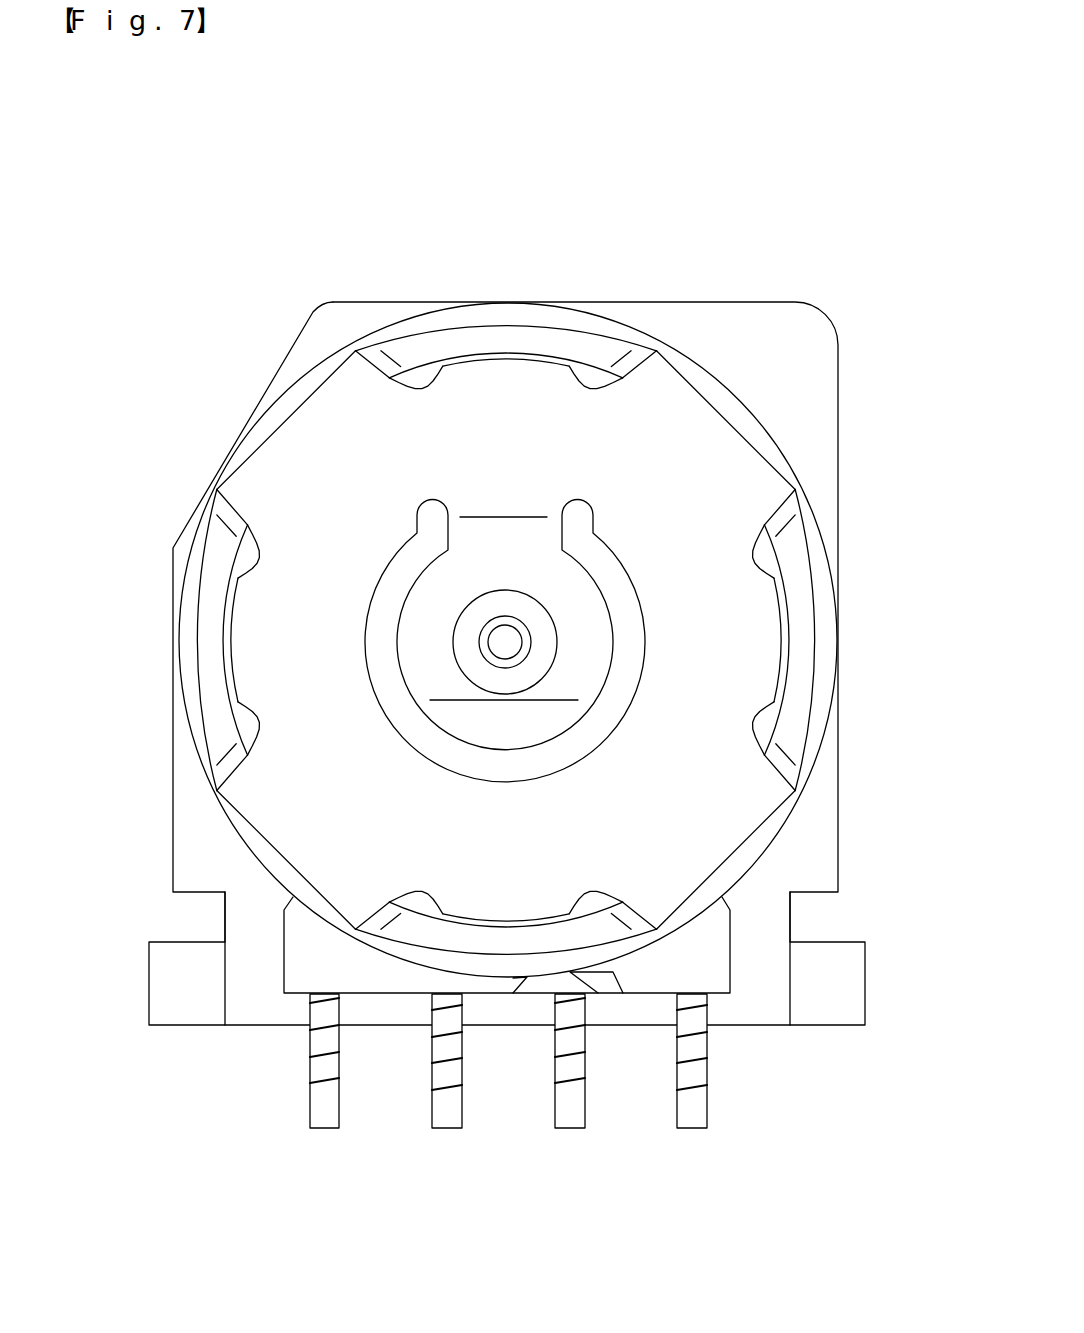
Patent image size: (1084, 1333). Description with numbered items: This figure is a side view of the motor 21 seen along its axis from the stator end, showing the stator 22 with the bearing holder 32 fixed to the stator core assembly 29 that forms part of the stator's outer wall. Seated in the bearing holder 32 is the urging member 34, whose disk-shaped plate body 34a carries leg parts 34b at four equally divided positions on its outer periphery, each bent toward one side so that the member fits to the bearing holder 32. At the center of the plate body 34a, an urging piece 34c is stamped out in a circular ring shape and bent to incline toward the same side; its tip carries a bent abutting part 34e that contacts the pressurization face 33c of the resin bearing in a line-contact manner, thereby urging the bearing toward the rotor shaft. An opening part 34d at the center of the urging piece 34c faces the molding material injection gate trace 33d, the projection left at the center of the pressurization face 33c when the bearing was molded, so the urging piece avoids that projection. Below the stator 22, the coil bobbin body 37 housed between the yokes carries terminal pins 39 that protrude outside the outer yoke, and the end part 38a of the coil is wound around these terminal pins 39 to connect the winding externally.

The motor 21 is at (303, 274).
The stator 22 is at (266, 349).
The stator core assembly 29 is at (758, 326).
The bearing holder 32 is at (473, 342).
The pressurization face 33c is at (532, 647).
The molding material injection gate trace 33d is at (527, 625).
The urging member 34 is at (585, 358).
The plate body 34a is at (747, 592).
The leg parts 34b is at (267, 443).
The urging piece 34c is at (430, 605).
The opening part 34d is at (460, 640).
The abutting part 34e is at (497, 700).
The coil bobbin body 37 is at (300, 953).
The end part of the coil 38a is at (321, 1083).
The terminal pins 39 is at (328, 1120).